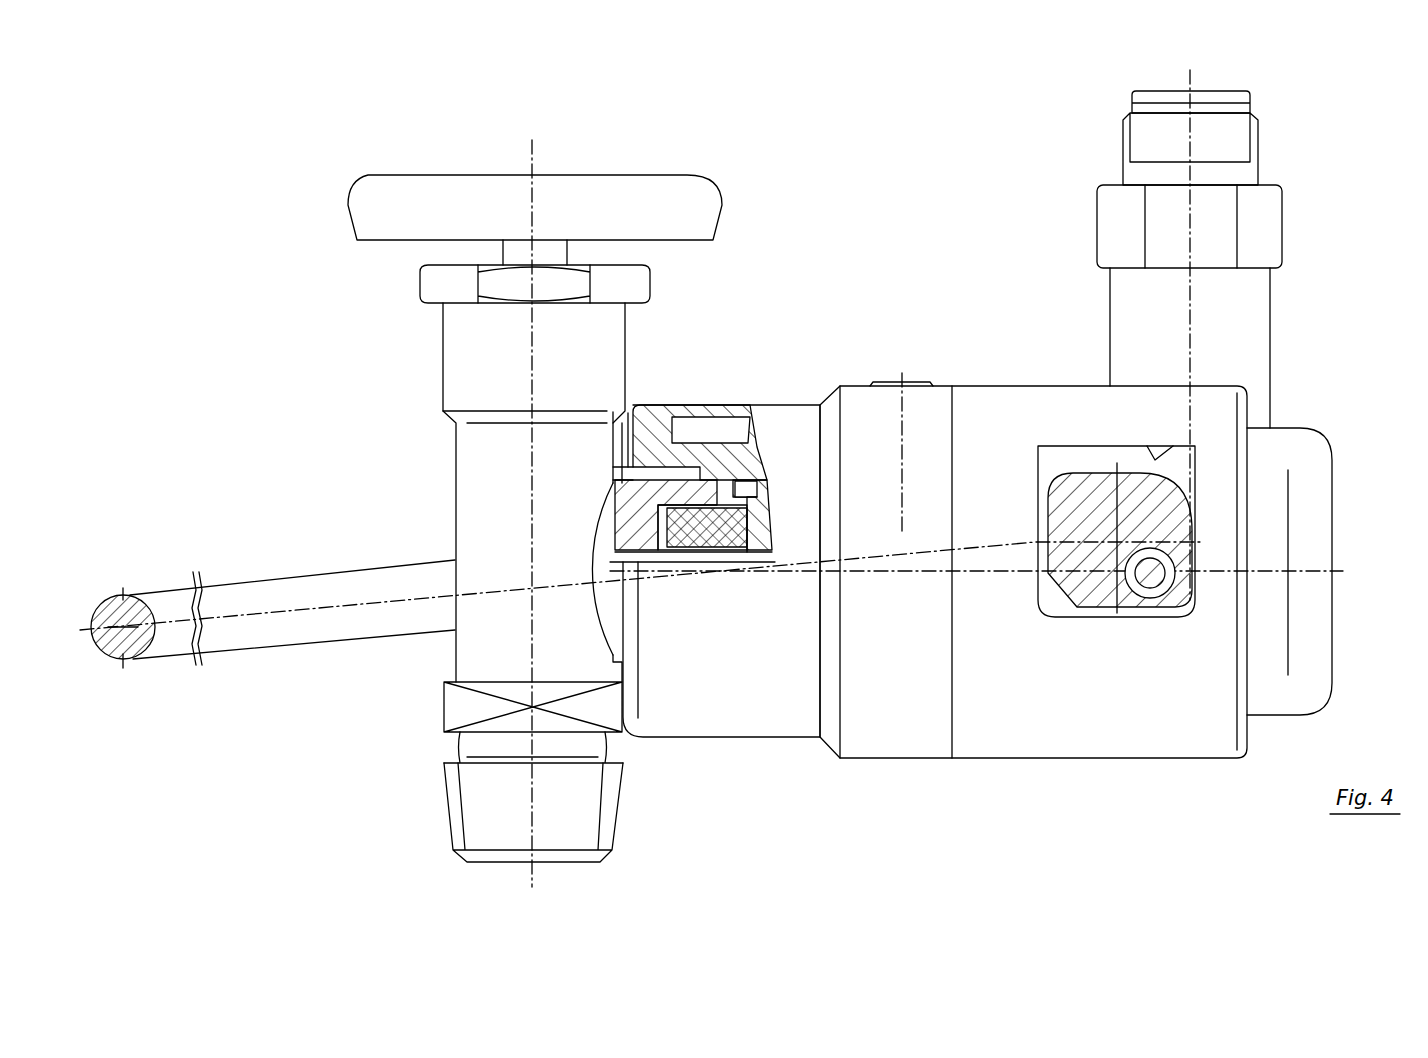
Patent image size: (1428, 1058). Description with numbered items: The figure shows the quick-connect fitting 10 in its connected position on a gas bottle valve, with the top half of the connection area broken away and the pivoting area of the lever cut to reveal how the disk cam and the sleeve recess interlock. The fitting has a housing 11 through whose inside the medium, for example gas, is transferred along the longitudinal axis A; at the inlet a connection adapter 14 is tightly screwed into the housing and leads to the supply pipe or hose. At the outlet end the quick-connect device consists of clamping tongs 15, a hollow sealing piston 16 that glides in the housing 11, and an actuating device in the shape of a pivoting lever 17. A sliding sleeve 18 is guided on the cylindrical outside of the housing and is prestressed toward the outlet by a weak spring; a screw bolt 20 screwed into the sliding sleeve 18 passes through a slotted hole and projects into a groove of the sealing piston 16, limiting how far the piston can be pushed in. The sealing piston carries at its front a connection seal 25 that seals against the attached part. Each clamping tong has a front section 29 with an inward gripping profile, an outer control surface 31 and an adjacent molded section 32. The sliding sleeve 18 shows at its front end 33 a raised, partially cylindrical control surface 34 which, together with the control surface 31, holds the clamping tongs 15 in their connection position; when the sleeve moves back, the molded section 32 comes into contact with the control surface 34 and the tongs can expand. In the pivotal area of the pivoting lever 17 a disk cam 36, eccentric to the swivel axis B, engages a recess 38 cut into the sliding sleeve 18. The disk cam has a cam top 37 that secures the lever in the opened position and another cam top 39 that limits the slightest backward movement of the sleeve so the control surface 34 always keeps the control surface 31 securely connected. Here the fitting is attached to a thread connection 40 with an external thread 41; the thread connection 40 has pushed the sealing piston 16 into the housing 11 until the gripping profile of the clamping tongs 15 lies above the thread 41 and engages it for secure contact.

The quick-connect fitting 10 is at (901, 287).
The housing 11 is at (1303, 480).
The connection adapter 14 is at (1242, 233).
The clamping tongs 15 is at (742, 460).
The sealing piston 16 is at (758, 520).
The pivoting lever 17 is at (213, 605).
The sliding sleeve 18 is at (1082, 730).
The screw bolt 20 is at (918, 382).
The connection seal 25 is at (707, 547).
The front section 29 is at (668, 440).
The control surface 31 is at (655, 445).
The molded section 32 is at (708, 460).
The front end 33 is at (650, 455).
The control surface 34 is at (607, 445).
The disk cam 36 is at (1090, 577).
The cam top 37 is at (1095, 470).
The recess 38 is at (1248, 398).
The cam top 39 is at (1040, 603).
The thread connection 40 is at (655, 508).
The external thread 41 is at (630, 472).
The longitudinal axis A is at (595, 568).
The swivel axis B is at (1162, 590).